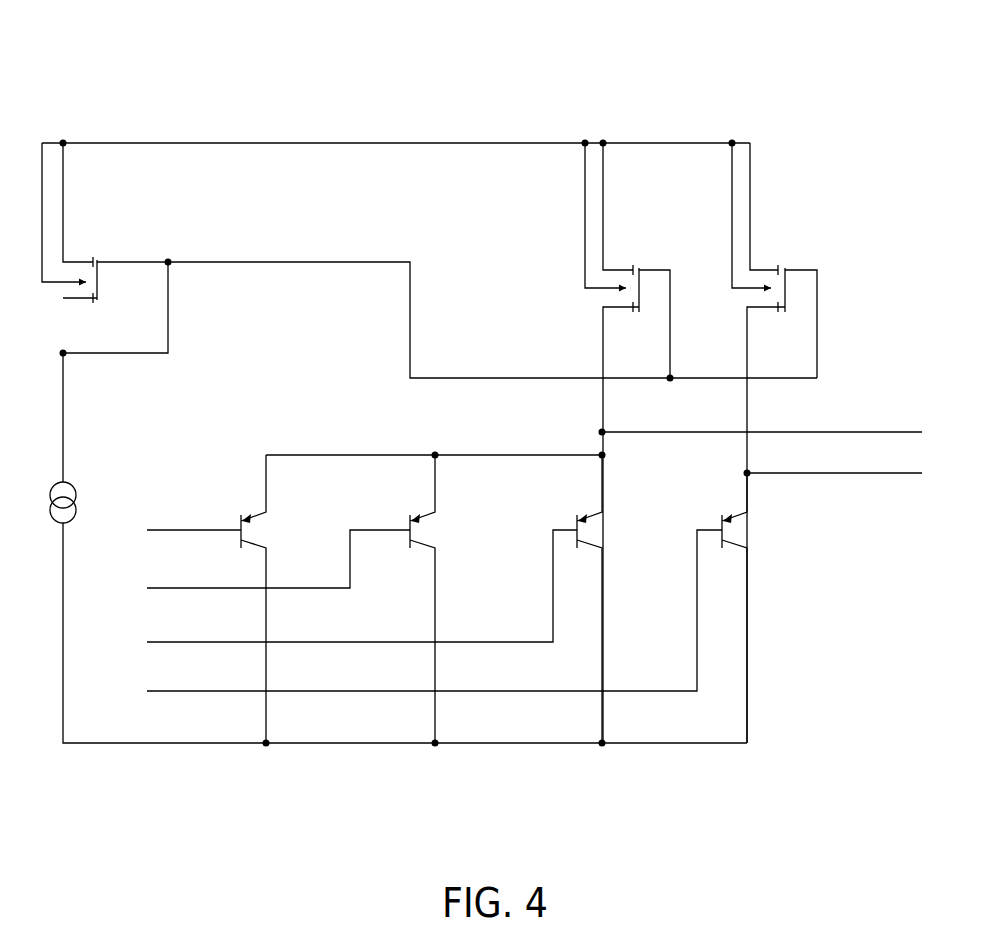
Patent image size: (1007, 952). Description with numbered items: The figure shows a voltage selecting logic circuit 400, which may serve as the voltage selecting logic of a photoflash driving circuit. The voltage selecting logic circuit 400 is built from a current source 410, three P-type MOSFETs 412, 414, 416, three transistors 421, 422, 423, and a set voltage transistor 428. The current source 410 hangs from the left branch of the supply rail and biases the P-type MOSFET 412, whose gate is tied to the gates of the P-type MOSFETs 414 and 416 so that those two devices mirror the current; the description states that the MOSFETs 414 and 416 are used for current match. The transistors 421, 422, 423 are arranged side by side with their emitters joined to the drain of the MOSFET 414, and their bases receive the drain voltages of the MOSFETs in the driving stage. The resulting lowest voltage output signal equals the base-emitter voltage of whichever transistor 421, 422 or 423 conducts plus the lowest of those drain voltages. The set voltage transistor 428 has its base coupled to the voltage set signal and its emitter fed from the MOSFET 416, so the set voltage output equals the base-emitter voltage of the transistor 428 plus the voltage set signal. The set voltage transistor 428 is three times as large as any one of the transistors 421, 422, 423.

The voltage selecting logic circuit 400 is at (720, 66).
The current source 410 is at (70, 484).
The P-type MOSFET 412 is at (100, 275).
The P-type MOSFET 414 is at (642, 302).
The P-type MOSFET 416 is at (788, 302).
The transistor 421 is at (251, 516).
The transistor 422 is at (417, 520).
The transistor 423 is at (583, 520).
The set voltage transistor 428 is at (725, 521).